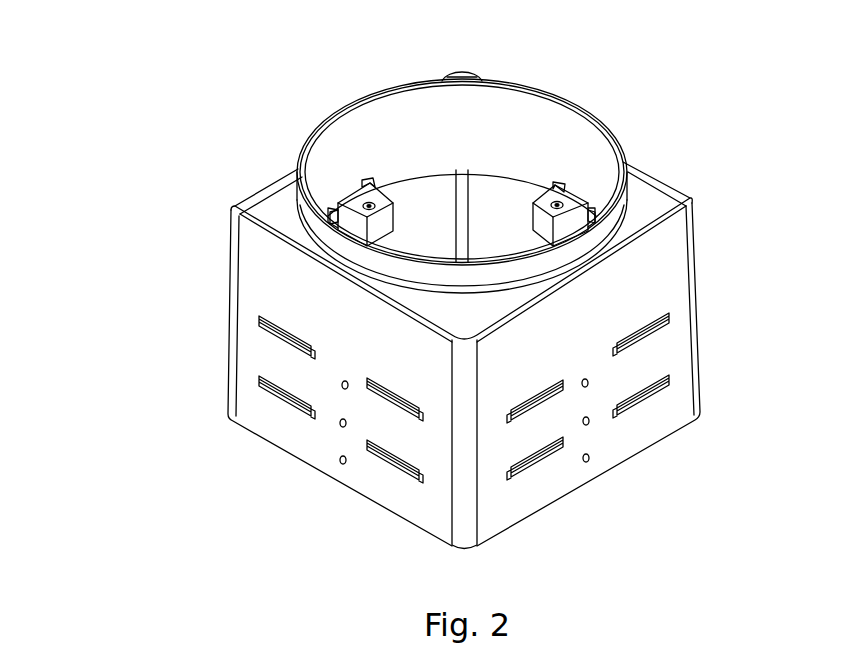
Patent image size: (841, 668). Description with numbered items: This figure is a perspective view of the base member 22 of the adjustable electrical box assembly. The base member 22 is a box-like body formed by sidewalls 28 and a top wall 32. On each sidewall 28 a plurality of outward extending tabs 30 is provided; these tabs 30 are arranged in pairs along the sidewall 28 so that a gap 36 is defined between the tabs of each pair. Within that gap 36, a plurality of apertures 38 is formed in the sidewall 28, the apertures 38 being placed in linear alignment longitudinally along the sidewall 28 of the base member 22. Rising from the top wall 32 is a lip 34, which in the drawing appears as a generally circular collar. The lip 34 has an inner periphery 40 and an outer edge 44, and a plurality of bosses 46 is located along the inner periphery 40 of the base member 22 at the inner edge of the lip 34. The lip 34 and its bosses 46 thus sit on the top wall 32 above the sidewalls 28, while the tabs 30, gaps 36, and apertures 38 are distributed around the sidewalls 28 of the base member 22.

The base member 22 is at (145, 157).
The sidewalls 28 is at (663, 291).
The outward extending tabs 30 is at (268, 322).
The top wall 32 is at (663, 216).
The lip 34 is at (553, 92).
The gap 36 is at (600, 427).
The apertures 38 is at (342, 462).
The inner periphery 40 is at (383, 132).
The outer edge 44 is at (392, 87).
The bosses 46 is at (376, 186).